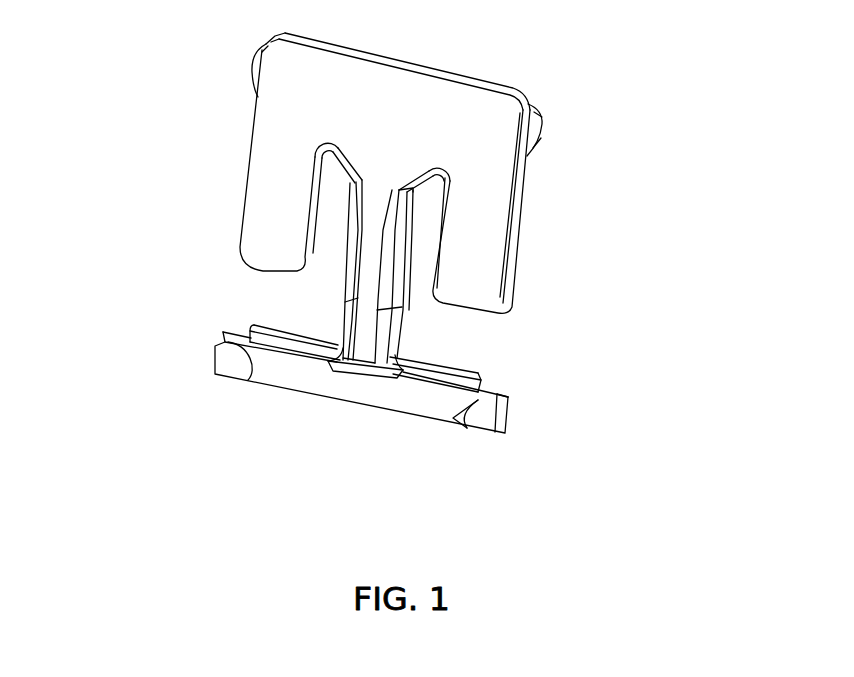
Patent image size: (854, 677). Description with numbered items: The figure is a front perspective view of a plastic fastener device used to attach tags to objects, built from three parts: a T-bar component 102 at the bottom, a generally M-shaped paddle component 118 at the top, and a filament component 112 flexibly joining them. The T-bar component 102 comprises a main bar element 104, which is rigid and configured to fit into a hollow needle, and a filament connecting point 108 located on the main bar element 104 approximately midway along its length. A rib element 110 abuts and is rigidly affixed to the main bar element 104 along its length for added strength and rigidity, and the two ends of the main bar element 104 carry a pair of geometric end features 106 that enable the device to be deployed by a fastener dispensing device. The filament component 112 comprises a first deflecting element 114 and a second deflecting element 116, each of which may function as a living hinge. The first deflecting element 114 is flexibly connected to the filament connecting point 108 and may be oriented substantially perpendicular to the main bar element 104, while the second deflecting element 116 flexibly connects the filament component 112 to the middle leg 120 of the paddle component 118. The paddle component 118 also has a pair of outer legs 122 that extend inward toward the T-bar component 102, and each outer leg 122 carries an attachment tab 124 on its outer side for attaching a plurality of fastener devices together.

The T-bar component 102 is at (383, 280).
The main bar element 104 is at (405, 429).
The geometric end features 106 is at (215, 360).
The filament connecting point 108 is at (388, 380).
The rib element 110 is at (290, 324).
The filament component 112 is at (397, 347).
The first deflecting element 114 is at (483, 374).
The second deflecting element 116 is at (403, 310).
The paddle component 118 is at (383, 173).
The middle leg 120 is at (345, 274).
The outer legs 122 is at (247, 192).
The attachment tab 124 is at (250, 68).